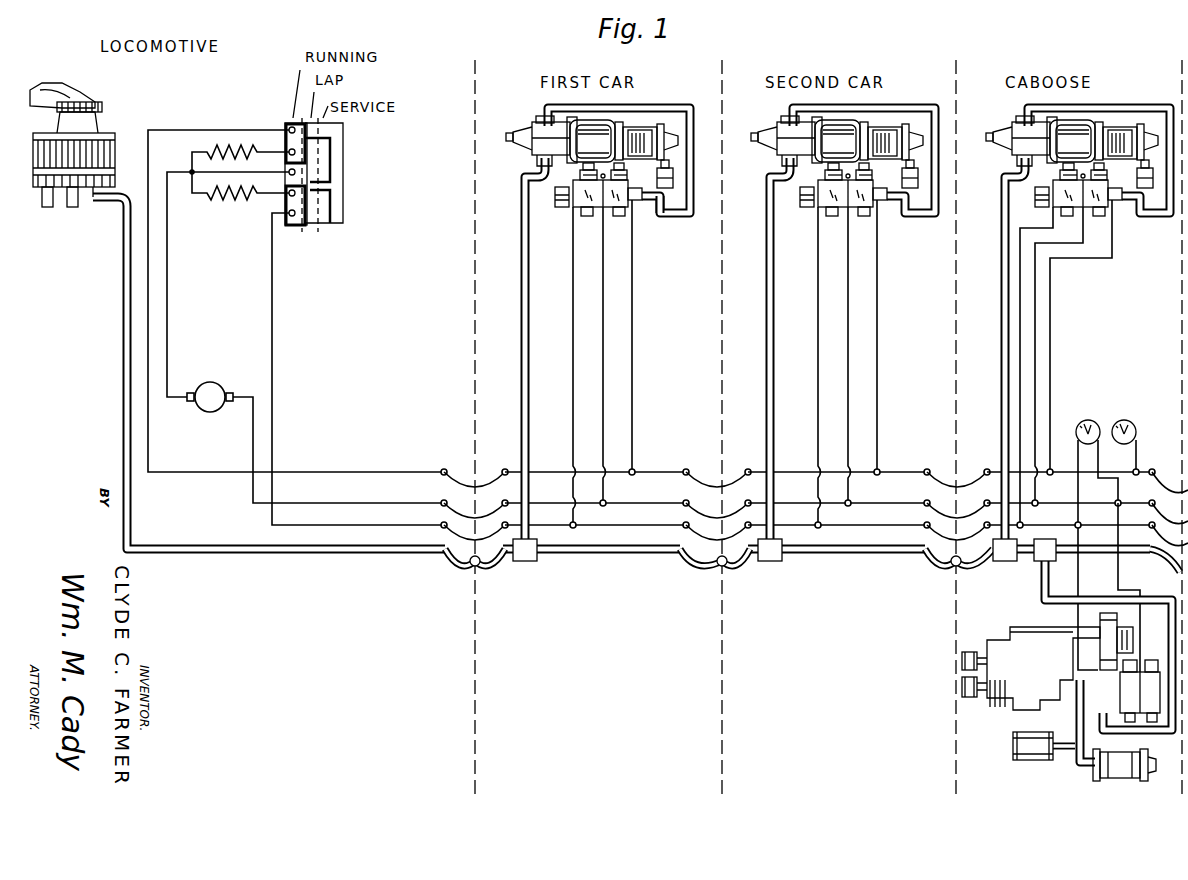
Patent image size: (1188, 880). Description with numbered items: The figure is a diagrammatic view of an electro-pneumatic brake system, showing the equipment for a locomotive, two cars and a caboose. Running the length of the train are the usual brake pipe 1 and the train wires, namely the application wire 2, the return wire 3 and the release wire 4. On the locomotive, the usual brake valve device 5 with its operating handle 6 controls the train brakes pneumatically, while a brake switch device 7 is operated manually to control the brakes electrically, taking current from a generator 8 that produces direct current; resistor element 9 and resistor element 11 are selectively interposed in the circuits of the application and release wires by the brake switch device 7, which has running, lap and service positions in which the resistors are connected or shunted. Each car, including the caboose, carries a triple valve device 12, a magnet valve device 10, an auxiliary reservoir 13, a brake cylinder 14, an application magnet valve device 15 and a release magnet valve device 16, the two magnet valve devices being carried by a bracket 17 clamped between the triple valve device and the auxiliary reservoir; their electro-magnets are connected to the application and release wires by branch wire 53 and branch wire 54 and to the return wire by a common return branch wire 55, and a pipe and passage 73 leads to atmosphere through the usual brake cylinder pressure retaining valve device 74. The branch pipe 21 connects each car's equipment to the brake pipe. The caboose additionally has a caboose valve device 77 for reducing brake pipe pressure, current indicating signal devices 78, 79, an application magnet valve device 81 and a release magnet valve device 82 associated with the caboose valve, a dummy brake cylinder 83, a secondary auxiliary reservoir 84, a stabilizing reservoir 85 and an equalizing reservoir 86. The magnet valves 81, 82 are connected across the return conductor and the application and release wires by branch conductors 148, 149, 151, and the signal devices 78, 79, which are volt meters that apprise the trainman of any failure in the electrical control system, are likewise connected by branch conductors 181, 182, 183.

The brake pipe 1 is at (190, 548).
The application wire 2 is at (335, 526).
The return wire 3 is at (347, 503).
The release wire 4 is at (347, 471).
The brake valve device 5 is at (55, 195).
The operating handle 6 is at (45, 95).
The brake switch device 7 is at (302, 226).
The generator 8 is at (210, 393).
The resistor element 9 is at (235, 202).
The magnet valve device 10 is at (598, 209).
The resistor element 11 is at (233, 146).
The triple valve device 12 is at (530, 122).
The auxiliary reservoir 13 is at (592, 126).
The brake cylinder 14 is at (641, 130).
The application magnet valve device 15 is at (582, 181).
The release magnet valve device 16 is at (622, 177).
The bracket 17 is at (557, 194).
The branch pipe 21 is at (524, 329).
The branch wire 53 is at (572, 378).
The branch wire 54 is at (634, 381).
The common return branch wire 55 is at (604, 338).
The pipe and passage 73 is at (661, 214).
The brake cylinder pressure retaining valve device 74 is at (676, 178).
The caboose valve device 77 is at (1022, 640).
The current indicating signal device 78 is at (1090, 420).
The current indicating signal device 79 is at (1126, 420).
The application magnet valve device 81 is at (1100, 645).
The release magnet valve device 82 is at (1140, 691).
The dummy brake cylinder 83 is at (1125, 770).
The secondary auxiliary reservoir 84 is at (970, 652).
The stabilizing reservoir 85 is at (1040, 760).
The equalizing reservoir 86 is at (970, 697).
The branch conductor 148 is at (1118, 568).
The branch conductor 149 is at (1074, 590).
The branch conductor 151 is at (1175, 590).
The branch conductor 181 is at (1112, 462).
The branch conductor 182 is at (1076, 444).
The branch conductor 183 is at (1138, 447).